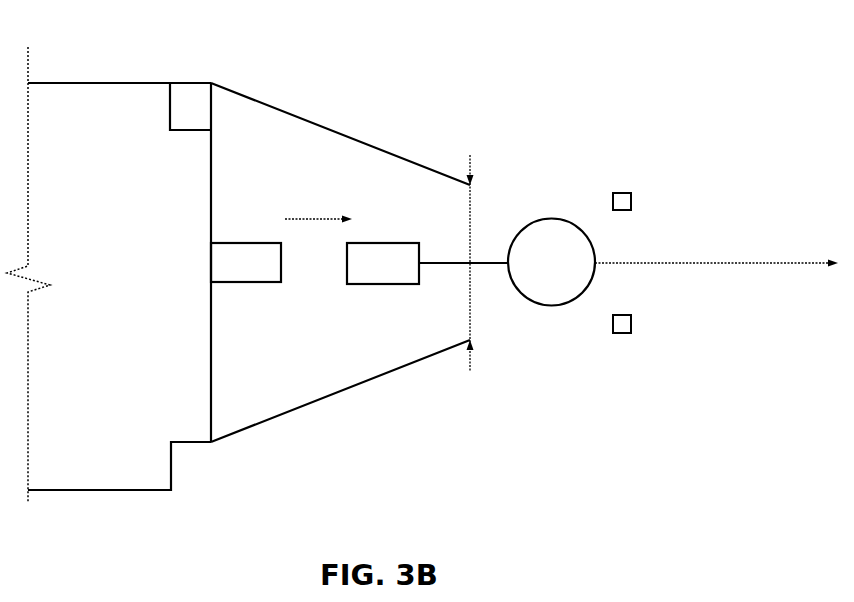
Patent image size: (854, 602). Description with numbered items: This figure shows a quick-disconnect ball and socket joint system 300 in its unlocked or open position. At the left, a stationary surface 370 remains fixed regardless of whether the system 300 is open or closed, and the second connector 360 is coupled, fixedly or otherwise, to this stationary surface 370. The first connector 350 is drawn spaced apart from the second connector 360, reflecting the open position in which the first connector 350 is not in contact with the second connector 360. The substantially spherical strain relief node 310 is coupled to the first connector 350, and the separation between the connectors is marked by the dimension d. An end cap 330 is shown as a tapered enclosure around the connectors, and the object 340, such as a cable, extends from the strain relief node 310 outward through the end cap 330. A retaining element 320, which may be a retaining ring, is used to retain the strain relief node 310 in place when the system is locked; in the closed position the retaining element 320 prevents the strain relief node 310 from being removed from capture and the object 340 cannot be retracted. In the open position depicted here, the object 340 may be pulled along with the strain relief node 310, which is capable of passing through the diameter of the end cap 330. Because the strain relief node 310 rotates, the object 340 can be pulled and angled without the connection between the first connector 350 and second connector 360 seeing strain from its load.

The quick-disconnect ball and socket joint system 300 is at (707, 55).
The strain relief node 310 is at (550, 310).
The retaining element 320 is at (632, 200).
The end cap 330 is at (344, 394).
The object 340 is at (761, 241).
The first connector 350 is at (386, 238).
The second connector 360 is at (257, 239).
The stationary surface 370 is at (220, 372).
The distance d is at (474, 215).